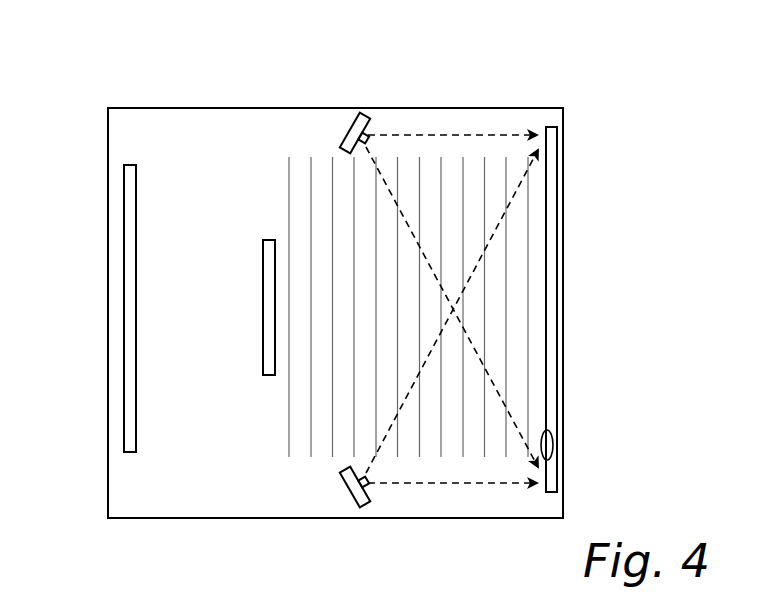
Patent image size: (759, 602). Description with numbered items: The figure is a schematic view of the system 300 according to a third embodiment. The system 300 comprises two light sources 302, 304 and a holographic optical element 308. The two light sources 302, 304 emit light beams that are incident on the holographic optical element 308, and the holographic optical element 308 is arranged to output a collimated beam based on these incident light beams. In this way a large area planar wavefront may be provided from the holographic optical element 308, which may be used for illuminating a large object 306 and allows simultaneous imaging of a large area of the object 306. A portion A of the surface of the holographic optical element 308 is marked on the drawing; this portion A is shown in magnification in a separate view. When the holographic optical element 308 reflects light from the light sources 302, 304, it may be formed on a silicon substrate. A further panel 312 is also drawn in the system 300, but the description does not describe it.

The system 300 is at (300, 58).
The light source 302 is at (348, 135).
The light source 304 is at (342, 492).
The large object 306 is at (263, 330).
The holographic optical element 308 is at (552, 205).
The rear wall panel 312 is at (130, 325).
The portion of the surface of the holographic optical element A is at (552, 432).